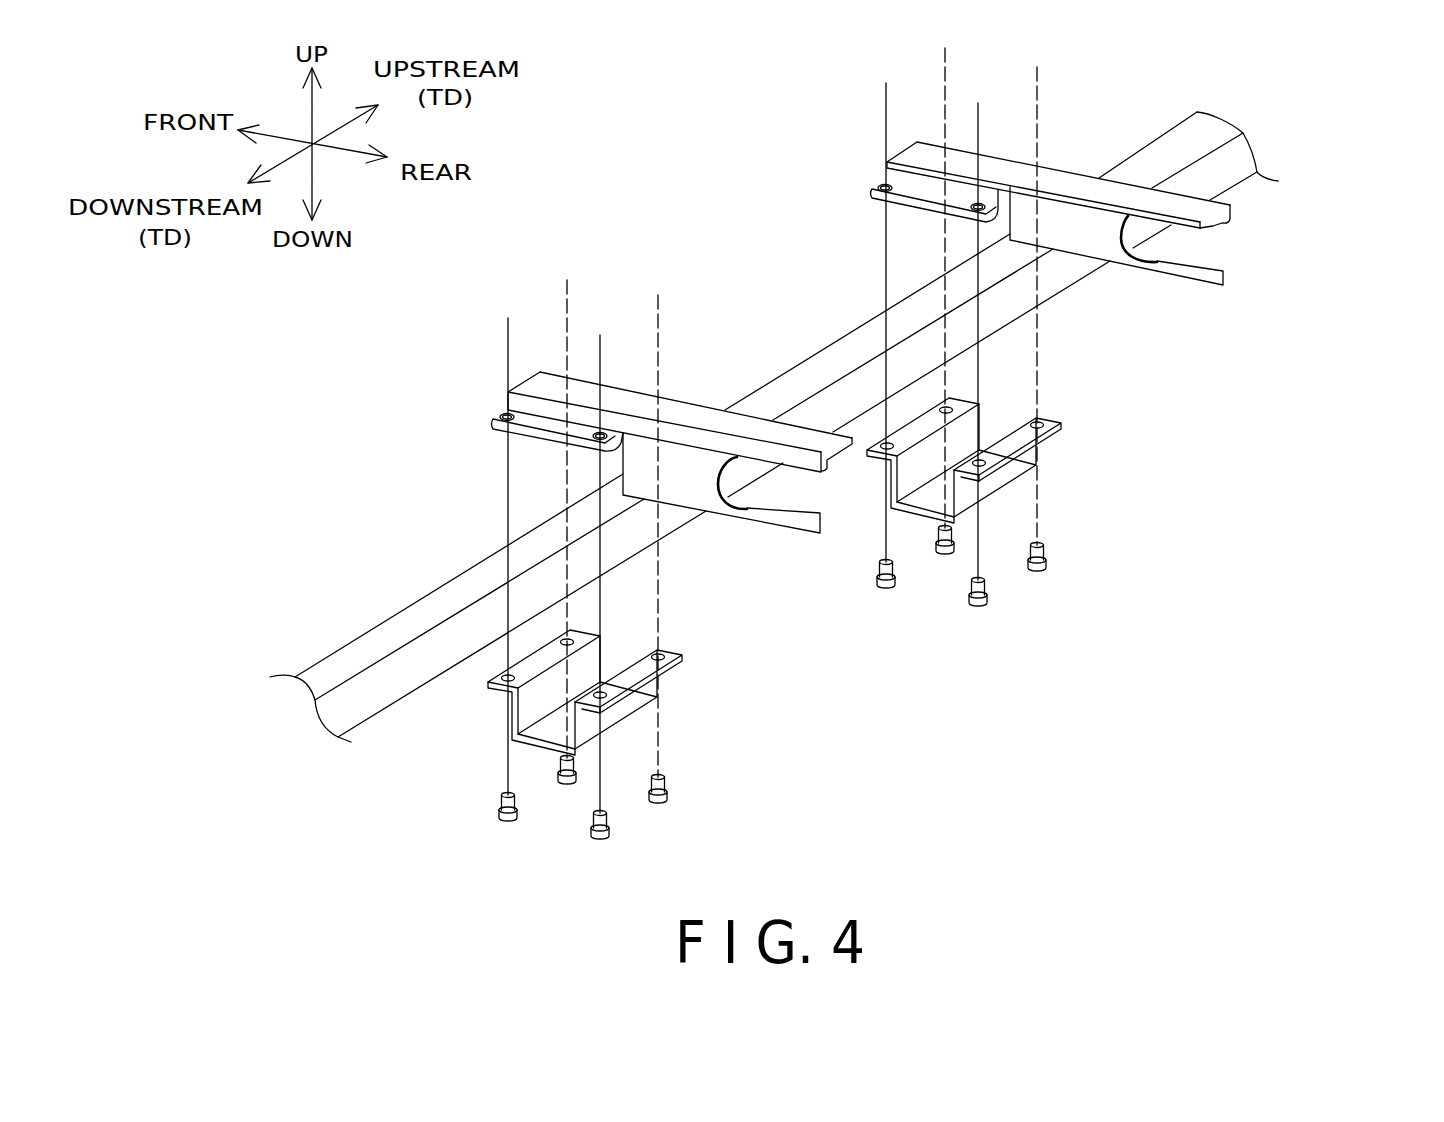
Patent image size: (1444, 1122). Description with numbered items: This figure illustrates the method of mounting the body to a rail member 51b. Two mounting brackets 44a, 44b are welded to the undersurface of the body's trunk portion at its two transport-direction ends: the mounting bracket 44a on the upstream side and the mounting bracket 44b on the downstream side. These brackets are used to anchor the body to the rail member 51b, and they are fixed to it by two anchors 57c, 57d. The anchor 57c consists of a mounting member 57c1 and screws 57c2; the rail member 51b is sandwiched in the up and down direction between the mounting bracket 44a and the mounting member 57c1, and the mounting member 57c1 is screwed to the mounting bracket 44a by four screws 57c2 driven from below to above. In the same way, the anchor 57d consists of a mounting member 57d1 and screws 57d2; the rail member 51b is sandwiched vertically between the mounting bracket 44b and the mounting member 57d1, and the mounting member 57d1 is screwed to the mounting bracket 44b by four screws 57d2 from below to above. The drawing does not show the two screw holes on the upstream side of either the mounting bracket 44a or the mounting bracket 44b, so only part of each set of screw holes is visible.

The rail member 51b is at (830, 348).
The mounting bracket 44a is at (1180, 277).
The mounting bracket 44b is at (748, 521).
The anchor 57c is at (1146, 355).
The mounting member 57c1 is at (1052, 438).
The screws 57c2 is at (1061, 606).
The anchor 57d is at (764, 583).
The mounting member 57d1 is at (673, 670).
The screws 57d2 is at (682, 836).